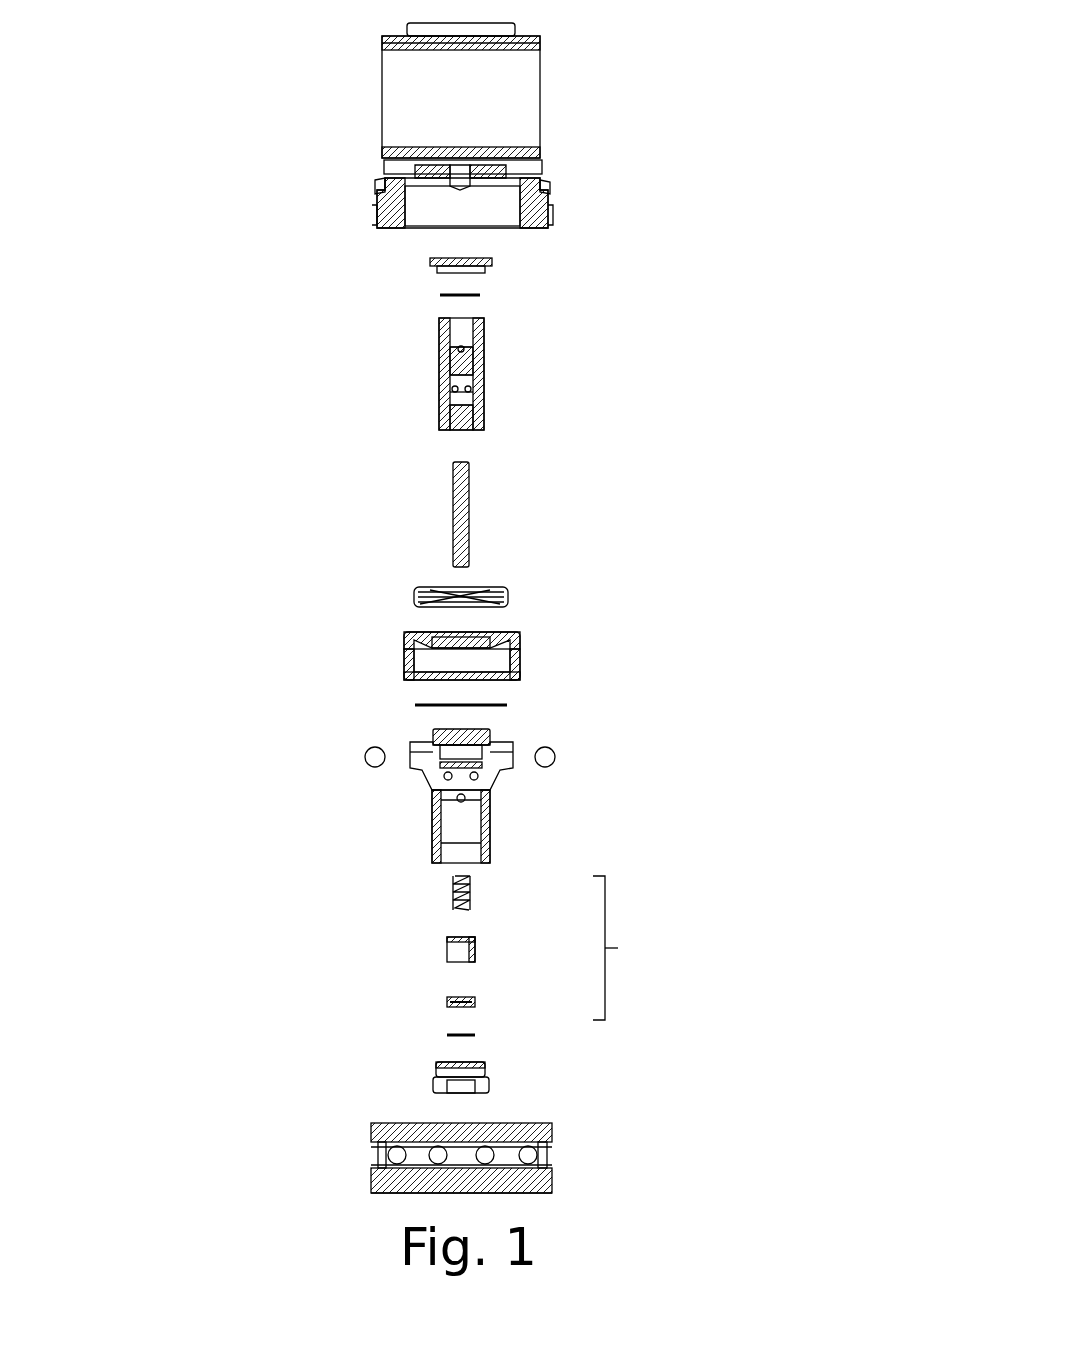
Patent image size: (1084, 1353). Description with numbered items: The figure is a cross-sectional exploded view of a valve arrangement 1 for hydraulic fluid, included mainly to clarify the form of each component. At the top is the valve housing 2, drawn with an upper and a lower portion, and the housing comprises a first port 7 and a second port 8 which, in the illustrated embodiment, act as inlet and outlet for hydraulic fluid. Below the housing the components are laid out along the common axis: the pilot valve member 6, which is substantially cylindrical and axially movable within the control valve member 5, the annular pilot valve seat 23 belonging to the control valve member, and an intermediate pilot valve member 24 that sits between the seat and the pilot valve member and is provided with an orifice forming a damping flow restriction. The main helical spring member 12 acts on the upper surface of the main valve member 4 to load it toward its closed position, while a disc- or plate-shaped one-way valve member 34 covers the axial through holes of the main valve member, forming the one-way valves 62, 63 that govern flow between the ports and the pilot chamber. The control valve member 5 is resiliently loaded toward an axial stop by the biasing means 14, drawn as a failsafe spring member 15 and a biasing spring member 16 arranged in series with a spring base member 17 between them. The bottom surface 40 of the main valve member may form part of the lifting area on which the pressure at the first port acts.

The valve arrangement 1 is at (694, 212).
The valve housing 2 is at (375, 205).
The main valve member 4 is at (432, 805).
The control valve member 5 is at (435, 415).
The pilot valve member 6 is at (455, 520).
The first port 7 is at (512, 1190).
The second port 8 is at (532, 1157).
The main helical spring member 12 is at (410, 600).
The biasing means 14 is at (630, 947).
The failsafe spring member 15 is at (450, 1008).
The biasing spring member 16 is at (458, 912).
The spring base member 17 is at (478, 948).
The pilot valve seat 23 is at (430, 265).
The intermediate pilot valve member 24 is at (480, 293).
The one-way valve member 34 is at (505, 692).
The bottom surface of the main valve member 40 is at (470, 1092).
The one-way valve 62 is at (352, 754).
The one-way valve 63 is at (562, 767).